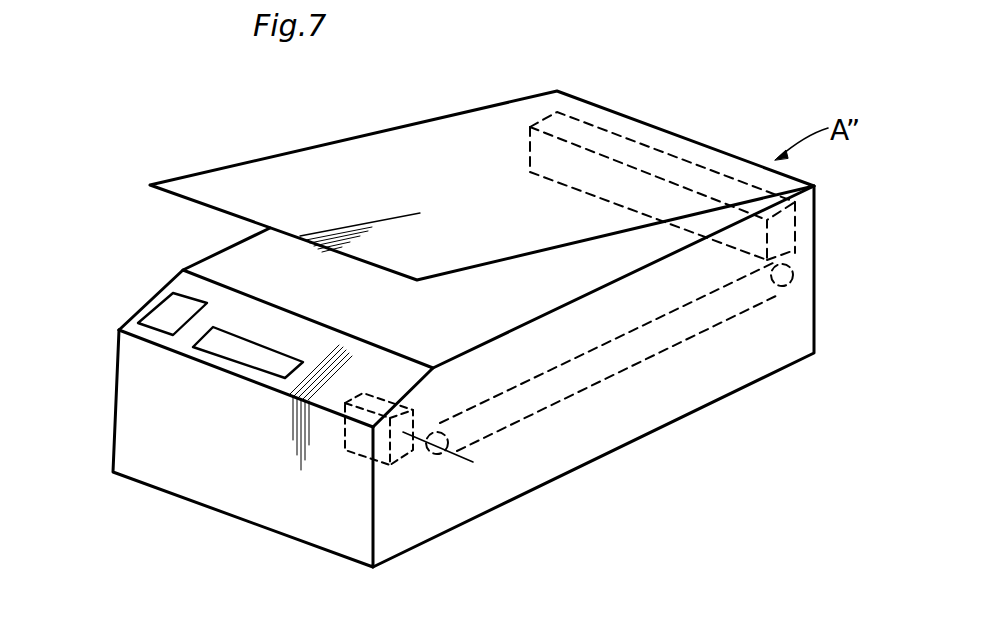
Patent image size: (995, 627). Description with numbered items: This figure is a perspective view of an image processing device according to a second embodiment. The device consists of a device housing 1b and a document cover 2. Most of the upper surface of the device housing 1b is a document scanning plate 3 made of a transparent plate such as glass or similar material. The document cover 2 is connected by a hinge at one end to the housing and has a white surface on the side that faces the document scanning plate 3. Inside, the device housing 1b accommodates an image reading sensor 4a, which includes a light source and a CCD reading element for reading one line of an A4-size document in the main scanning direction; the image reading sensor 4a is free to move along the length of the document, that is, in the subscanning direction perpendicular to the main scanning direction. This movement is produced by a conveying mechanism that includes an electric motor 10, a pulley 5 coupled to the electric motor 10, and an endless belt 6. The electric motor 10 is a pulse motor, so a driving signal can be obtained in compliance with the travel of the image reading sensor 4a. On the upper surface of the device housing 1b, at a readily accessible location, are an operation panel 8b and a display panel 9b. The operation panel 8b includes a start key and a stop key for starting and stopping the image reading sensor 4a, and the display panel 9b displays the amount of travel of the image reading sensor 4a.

The device housing 1b is at (183, 507).
The document cover 2 is at (248, 172).
The document scanning plate 3 is at (213, 260).
The image reading sensor 4a is at (681, 170).
The pulley 5 is at (437, 457).
The endless belt 6 is at (582, 392).
The operation panel 8b is at (165, 311).
The display panel 9b is at (220, 347).
The electric motor 10 is at (353, 443).